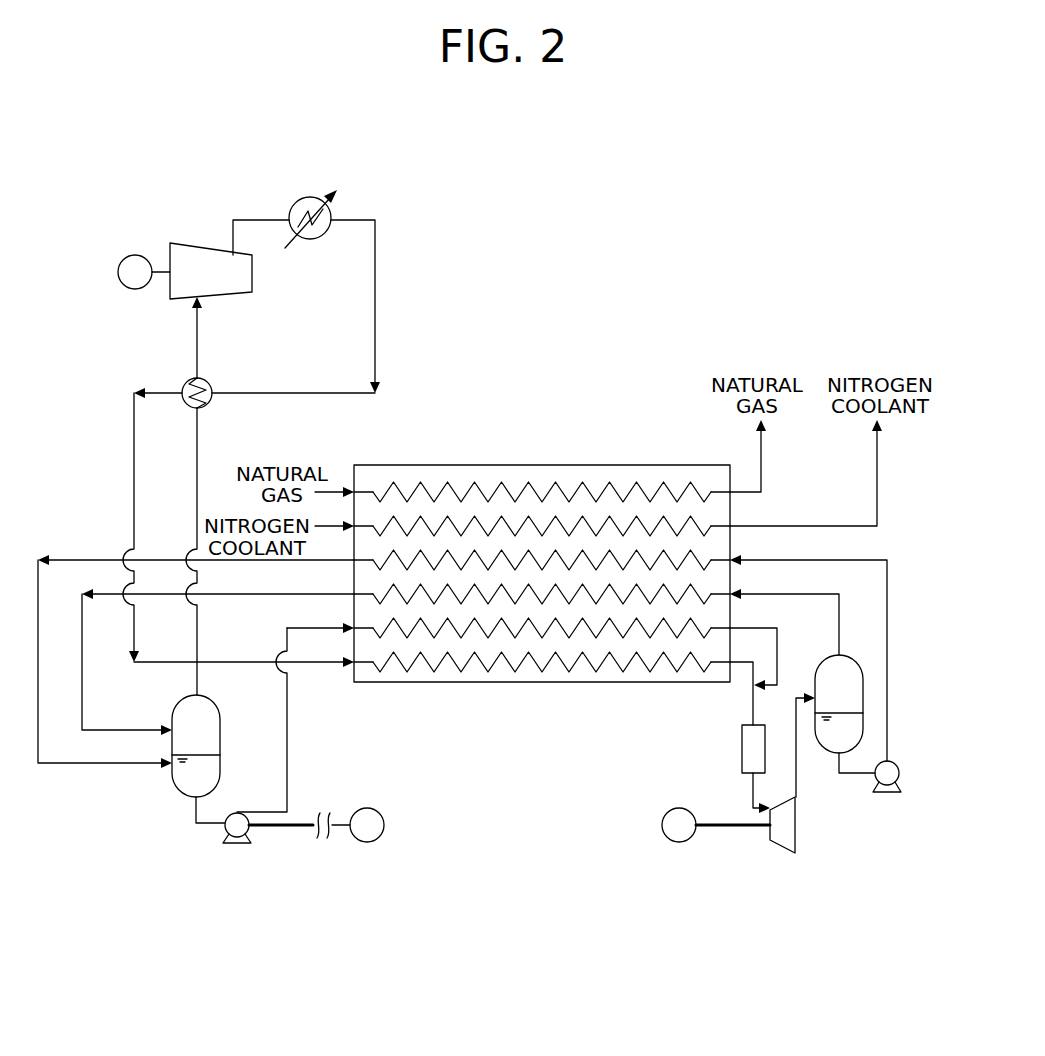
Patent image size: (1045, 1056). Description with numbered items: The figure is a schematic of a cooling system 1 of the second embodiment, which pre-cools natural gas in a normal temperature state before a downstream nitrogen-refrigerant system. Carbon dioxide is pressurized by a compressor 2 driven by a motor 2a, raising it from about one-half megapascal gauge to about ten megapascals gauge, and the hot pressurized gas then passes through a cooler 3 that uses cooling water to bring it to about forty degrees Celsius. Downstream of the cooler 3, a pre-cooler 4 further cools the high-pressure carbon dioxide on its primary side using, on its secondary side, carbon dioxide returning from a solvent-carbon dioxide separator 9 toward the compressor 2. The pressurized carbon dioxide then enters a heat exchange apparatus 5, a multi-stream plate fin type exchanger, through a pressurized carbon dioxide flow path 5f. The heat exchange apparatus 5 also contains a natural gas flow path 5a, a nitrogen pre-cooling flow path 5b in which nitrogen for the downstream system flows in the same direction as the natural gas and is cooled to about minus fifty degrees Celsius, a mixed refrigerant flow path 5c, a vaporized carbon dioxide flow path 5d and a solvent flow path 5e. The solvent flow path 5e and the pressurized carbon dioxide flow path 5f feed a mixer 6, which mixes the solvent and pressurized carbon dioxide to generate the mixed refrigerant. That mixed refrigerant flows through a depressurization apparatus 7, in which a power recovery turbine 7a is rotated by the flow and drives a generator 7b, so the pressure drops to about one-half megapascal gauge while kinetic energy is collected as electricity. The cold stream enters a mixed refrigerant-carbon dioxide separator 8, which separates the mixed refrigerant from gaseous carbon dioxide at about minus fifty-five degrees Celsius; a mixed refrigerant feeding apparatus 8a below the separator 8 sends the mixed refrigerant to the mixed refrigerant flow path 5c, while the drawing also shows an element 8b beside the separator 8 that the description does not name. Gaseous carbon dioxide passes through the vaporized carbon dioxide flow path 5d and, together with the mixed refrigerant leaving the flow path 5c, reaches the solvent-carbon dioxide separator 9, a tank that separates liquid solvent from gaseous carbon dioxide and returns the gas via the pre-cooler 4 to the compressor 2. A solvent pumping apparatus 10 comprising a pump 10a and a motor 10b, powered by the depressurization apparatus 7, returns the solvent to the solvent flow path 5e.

The cooling system 1 is at (150, 130).
The compressor 2 is at (180, 243).
The motor 2a is at (118, 273).
The cooler 3 is at (337, 210).
The pre-cooler 4 is at (186, 382).
The heat exchange apparatus 5 is at (542, 571).
The natural gas flow path 5a is at (412, 491).
The nitrogen pre-cooling flow path 5b is at (468, 518).
The mixed refrigerant flow path 5c is at (510, 557).
The vaporized carbon dioxide flow path 5d is at (507, 595).
The solvent flow path 5e is at (560, 632).
The pressurized carbon dioxide flow path 5f is at (613, 664).
The mixer 6 is at (742, 757).
The depressurization apparatus 7 is at (753, 854).
The power recovery turbine 7a is at (781, 851).
The generator 7b is at (680, 843).
The mixed refrigerant-carbon dioxide separator 8 is at (870, 750).
The mixed refrigerant feeding apparatus 8a is at (825, 757).
The pump 8b is at (900, 772).
The solvent-carbon dioxide separator 9 is at (175, 788).
The solvent pumping apparatus 10 is at (260, 864).
The pump 10a is at (237, 846).
The motor 10b is at (365, 845).